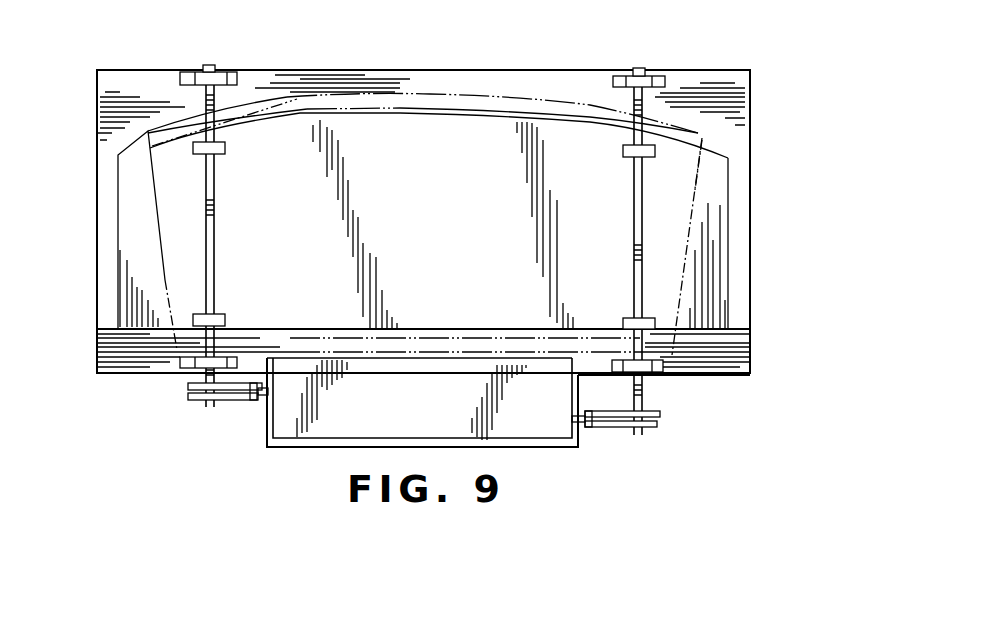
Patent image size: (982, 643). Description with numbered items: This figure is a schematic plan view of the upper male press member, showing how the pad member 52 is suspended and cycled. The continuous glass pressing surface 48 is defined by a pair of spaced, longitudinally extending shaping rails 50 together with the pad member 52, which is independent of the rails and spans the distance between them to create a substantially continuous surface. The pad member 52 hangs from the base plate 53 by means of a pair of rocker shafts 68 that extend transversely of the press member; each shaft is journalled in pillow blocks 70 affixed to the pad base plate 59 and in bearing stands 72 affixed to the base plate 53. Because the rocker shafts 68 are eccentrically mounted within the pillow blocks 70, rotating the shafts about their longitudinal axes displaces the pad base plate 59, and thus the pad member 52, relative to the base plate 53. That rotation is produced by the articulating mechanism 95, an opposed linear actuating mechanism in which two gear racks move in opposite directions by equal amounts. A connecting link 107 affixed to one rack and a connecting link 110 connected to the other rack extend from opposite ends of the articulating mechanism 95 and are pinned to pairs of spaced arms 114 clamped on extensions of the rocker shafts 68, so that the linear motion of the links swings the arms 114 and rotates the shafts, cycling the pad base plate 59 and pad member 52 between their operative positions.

The glass contacting or pressing surface 48 is at (158, 223).
The shaping rails 50 is at (525, 102).
The pad member 52 is at (690, 236).
The base plate 53 is at (737, 84).
The pad base plate 59 is at (720, 173).
The rocker shafts 68 is at (214, 228).
The pillow blocks 70 is at (226, 148).
The bearing stands 72 is at (202, 72).
The articulating mechanism 95 is at (267, 450).
The connecting link 107 is at (265, 402).
The connecting link 110 is at (580, 430).
The spaced arms 114 is at (190, 398).